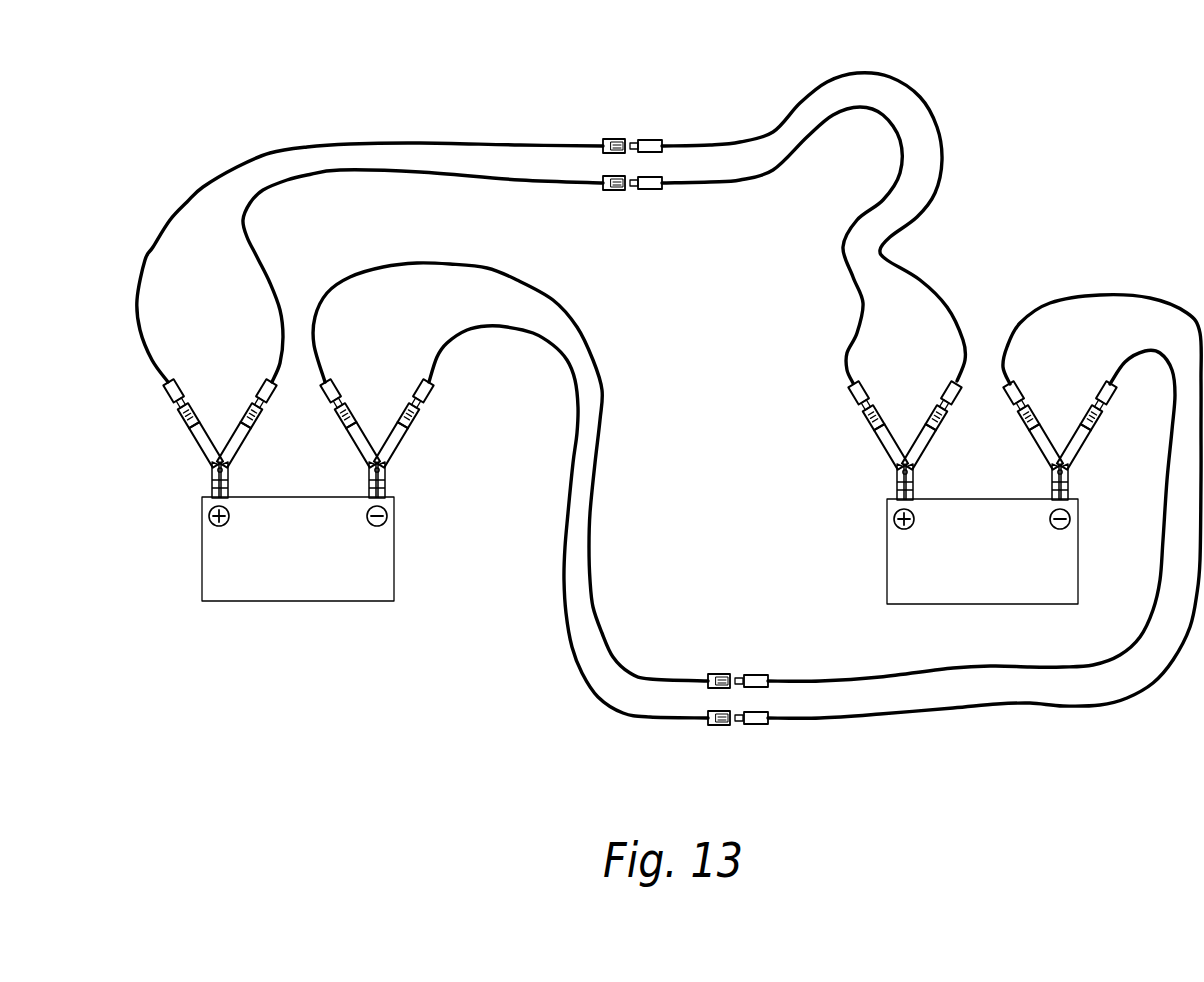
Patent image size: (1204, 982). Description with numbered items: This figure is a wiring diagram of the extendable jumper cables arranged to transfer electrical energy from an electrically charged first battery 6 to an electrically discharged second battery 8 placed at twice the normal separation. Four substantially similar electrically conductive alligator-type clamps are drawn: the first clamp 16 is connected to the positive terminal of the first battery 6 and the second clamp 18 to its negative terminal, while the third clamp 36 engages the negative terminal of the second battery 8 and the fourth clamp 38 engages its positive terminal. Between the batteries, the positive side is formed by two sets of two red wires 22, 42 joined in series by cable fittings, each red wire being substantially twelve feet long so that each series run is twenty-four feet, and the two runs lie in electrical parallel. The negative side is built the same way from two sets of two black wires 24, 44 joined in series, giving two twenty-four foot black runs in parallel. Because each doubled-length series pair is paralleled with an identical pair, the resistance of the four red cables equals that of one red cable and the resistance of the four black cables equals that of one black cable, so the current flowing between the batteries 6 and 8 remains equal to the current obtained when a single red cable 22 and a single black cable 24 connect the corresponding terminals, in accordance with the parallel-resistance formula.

The first battery 6 is at (310, 567).
The second battery 8 is at (997, 583).
The first clamp 16 is at (212, 478).
The second clamp 18 is at (388, 480).
The red wire 22 is at (310, 146).
The black wire 24 is at (605, 442).
The third clamp 36 is at (1072, 477).
The fourth clamp 38 is at (897, 473).
The red wire 42 is at (946, 123).
The black wire 44 is at (818, 680).